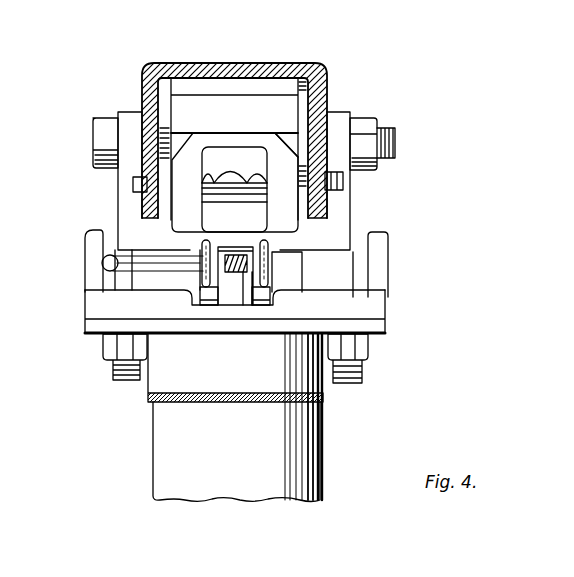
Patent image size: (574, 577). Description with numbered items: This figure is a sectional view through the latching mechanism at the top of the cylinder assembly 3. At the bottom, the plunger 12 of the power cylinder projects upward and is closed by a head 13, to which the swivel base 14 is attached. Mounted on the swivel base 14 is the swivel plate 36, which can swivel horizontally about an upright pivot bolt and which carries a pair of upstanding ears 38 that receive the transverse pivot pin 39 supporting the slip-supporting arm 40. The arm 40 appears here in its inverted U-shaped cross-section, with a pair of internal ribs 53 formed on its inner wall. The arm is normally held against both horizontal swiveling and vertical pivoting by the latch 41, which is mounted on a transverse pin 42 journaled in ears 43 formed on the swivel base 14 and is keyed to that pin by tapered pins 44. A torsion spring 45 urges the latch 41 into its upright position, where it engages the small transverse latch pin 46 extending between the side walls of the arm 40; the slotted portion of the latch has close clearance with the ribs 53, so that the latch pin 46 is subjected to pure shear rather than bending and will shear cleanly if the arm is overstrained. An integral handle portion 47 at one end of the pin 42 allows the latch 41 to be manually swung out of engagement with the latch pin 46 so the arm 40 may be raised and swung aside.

The cylinder assembly 3 is at (323, 431).
The plunger 12 is at (163, 458).
The head 13 is at (163, 383).
The swivel base 14 is at (90, 310).
The swivel plate 36 is at (318, 242).
The upstanding ears 38 is at (345, 135).
The transverse pivot pin 39 is at (177, 133).
The slip-supporting arm 40 is at (243, 66).
The latch 41 is at (273, 150).
The transverse pin 42 is at (247, 285).
The ears 43 is at (177, 275).
The tapered pins 44 is at (203, 272).
The torsion spring 45 is at (237, 265).
The latch pin 46 is at (226, 186).
The handle portion 47 is at (103, 266).
The internal ribs 53 is at (171, 88).